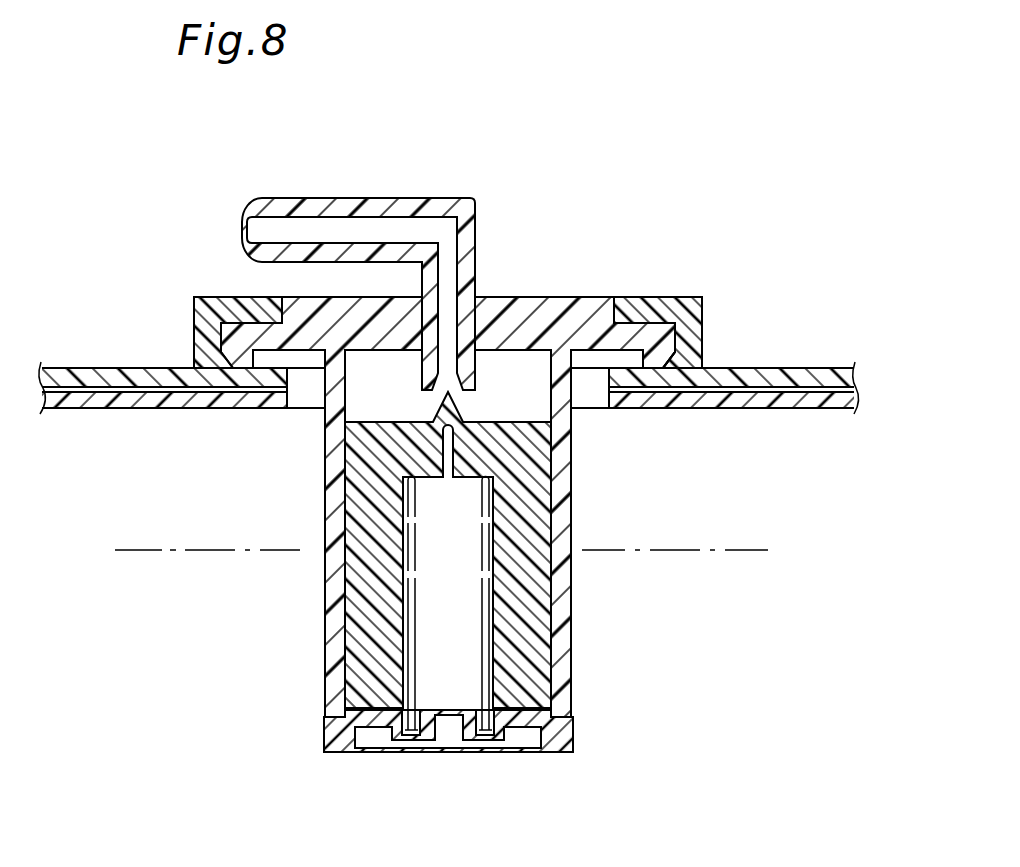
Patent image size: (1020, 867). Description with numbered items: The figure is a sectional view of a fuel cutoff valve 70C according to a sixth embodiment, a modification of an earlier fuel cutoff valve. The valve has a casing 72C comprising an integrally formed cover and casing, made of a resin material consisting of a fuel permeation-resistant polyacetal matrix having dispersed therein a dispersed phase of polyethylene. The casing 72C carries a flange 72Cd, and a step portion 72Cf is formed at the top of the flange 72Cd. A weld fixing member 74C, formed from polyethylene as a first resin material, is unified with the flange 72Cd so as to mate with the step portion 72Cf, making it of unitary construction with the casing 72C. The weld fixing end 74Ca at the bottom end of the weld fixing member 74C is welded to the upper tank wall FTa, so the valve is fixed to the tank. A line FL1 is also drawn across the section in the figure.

The fuel cutoff valve 70C is at (627, 132).
The casing 72C is at (550, 310).
The step portion 72Cf is at (650, 310).
The flange 72Cd is at (660, 333).
The weld fixing member 74C is at (703, 318).
The weld fixing end 74Ca is at (692, 362).
The upper tank wall FTa is at (128, 368).
The fuel level line FL1 is at (708, 550).